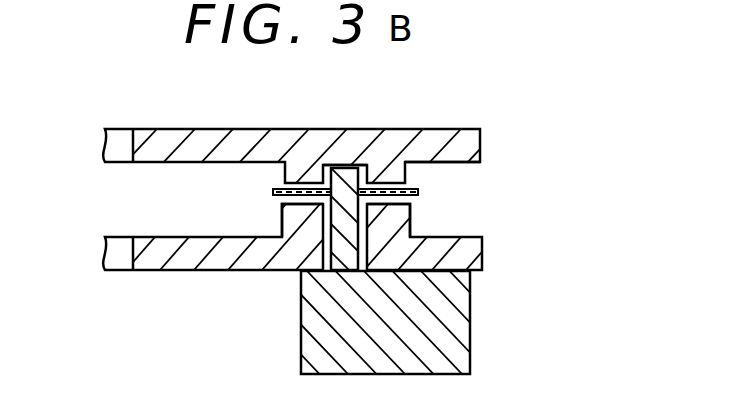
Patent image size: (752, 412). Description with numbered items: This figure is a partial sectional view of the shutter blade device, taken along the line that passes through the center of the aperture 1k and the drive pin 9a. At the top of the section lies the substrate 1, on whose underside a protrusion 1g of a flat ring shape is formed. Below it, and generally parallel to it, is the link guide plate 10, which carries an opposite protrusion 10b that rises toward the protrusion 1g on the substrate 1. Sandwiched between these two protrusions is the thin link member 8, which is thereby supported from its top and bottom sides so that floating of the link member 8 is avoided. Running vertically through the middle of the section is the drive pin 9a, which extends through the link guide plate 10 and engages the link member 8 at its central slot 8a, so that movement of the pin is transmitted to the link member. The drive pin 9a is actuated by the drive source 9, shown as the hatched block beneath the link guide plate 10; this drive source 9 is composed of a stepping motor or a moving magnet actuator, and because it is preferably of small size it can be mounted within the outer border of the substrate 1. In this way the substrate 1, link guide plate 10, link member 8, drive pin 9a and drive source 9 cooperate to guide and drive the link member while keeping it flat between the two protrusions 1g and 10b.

The substrate 1 is at (470, 130).
The aperture 1k is at (118, 135).
The protrusion 1g is at (405, 166).
The link member 8 is at (418, 193).
The central slot 8a is at (363, 178).
The drive source 9 is at (443, 308).
The drive pin 9a is at (340, 170).
The link guide plate 10 is at (463, 237).
The protrusion 10b is at (290, 212).